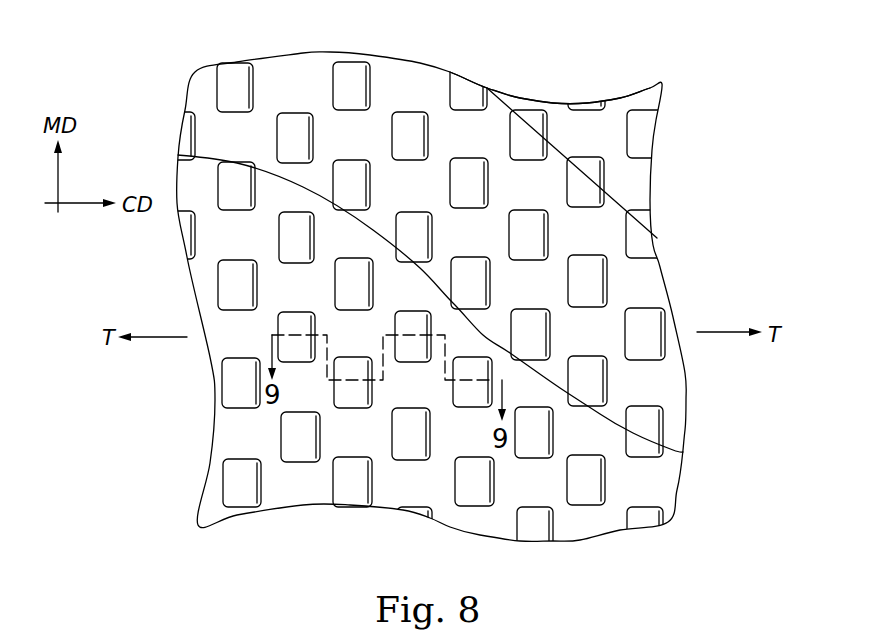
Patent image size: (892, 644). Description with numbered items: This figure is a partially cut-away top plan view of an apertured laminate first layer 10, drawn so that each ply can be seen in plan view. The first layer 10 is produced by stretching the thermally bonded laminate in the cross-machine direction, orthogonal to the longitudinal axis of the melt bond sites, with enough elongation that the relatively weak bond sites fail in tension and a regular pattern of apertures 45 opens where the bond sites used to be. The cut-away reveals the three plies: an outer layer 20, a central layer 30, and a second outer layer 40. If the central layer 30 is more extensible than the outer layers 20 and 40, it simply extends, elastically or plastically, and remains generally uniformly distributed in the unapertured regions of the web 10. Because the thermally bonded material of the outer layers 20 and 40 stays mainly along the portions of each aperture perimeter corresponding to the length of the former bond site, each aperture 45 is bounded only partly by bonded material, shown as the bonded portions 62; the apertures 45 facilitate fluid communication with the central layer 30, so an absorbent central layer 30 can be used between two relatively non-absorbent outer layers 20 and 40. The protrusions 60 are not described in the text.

The first layer 10 is at (694, 225).
The outer layer 20 is at (282, 283).
The central layer 30 is at (633, 288).
The outer layer 40 is at (520, 102).
The aperture 45 is at (288, 138).
The protrusion 60 is at (583, 493).
The bonded portions 62 is at (607, 183).